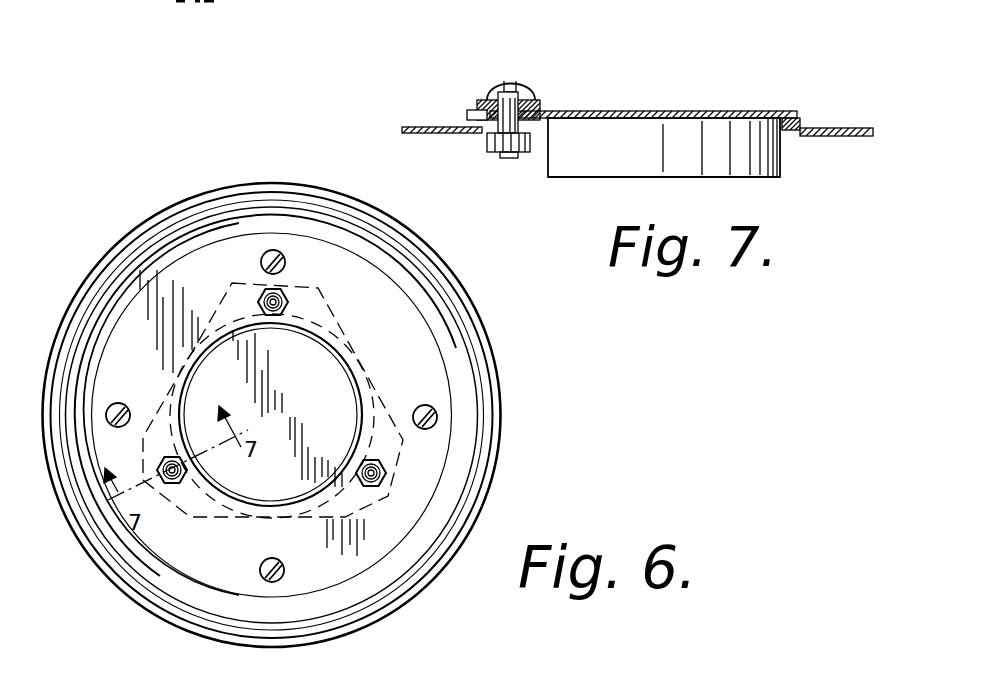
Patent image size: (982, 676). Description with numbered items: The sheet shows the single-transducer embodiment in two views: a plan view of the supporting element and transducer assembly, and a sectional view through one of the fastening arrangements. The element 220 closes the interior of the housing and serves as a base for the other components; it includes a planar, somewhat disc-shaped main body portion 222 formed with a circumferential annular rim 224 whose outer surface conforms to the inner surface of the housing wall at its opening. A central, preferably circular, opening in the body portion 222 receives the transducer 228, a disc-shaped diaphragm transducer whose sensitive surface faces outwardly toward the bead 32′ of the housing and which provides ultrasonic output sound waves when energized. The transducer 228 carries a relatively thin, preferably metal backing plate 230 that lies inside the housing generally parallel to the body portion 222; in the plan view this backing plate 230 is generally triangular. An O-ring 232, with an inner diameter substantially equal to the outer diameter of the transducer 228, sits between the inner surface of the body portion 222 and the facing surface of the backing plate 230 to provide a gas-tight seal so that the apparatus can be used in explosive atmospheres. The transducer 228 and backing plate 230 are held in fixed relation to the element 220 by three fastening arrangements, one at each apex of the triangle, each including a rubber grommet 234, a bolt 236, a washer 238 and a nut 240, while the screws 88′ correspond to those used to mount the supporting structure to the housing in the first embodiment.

In FIG. 6, the bead 32′ is at (181, 205).
In FIG. 6, the screws 88′ is at (259, 262).
In FIG. 6, the supporting element 220 is at (188, 557).
In FIG. 6, the main body portion 222 is at (400, 318).
In FIG. 7, the main body portion 222 is at (840, 139).
In FIG. 6, the annular rim 224 is at (470, 418).
In FIG. 6, the transducer 228 is at (222, 377).
In FIG. 7, the transducer 228 is at (683, 168).
In FIG. 6, the backing plate 230 is at (378, 302).
In FIG. 7, the backing plate 230 is at (687, 114).
In FIG. 6, the O-ring 232 is at (380, 402).
In FIG. 7, the O-ring 232 is at (543, 118).
In FIG. 7, the rubber grommet 234 is at (482, 109).
In FIG. 6, the bolt 236 is at (274, 318).
In FIG. 7, the bolt 236 is at (524, 83).
In FIG. 7, the washer 238 is at (486, 98).
In FIG. 6, the nut 240 is at (386, 480).
In FIG. 7, the nut 240 is at (490, 137).